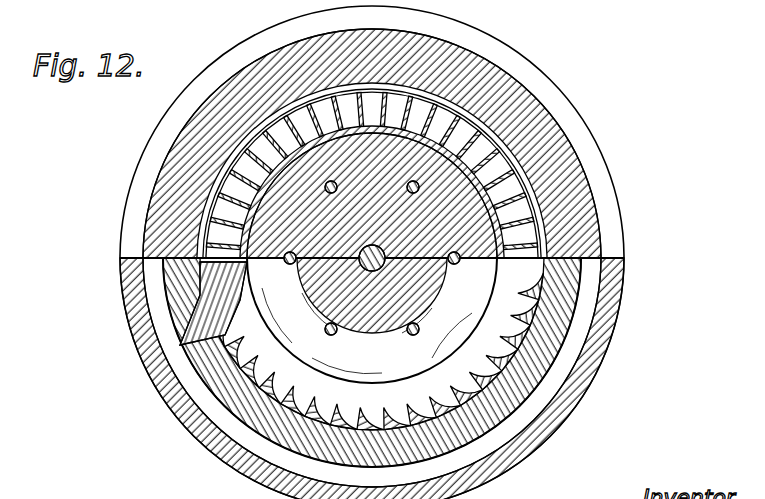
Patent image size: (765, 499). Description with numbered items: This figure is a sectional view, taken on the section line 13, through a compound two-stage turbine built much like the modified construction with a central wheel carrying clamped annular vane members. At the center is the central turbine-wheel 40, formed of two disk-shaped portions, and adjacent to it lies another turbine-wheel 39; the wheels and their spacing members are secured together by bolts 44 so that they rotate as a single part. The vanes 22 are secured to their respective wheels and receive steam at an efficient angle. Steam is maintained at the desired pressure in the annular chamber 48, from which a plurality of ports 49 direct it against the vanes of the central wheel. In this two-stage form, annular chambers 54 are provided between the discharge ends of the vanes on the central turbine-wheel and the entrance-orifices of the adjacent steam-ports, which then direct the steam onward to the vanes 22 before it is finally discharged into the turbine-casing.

The section line 13 is at (372, 249).
The vanes 22 is at (372, 143).
The turbine-wheel 39 is at (427, 173).
The central turbine-wheel 40 is at (372, 258).
The bolts 44 is at (372, 268).
The annular chamber 48 is at (405, 362).
The ports 49 is at (202, 371).
The annular chambers 54 is at (436, 350).